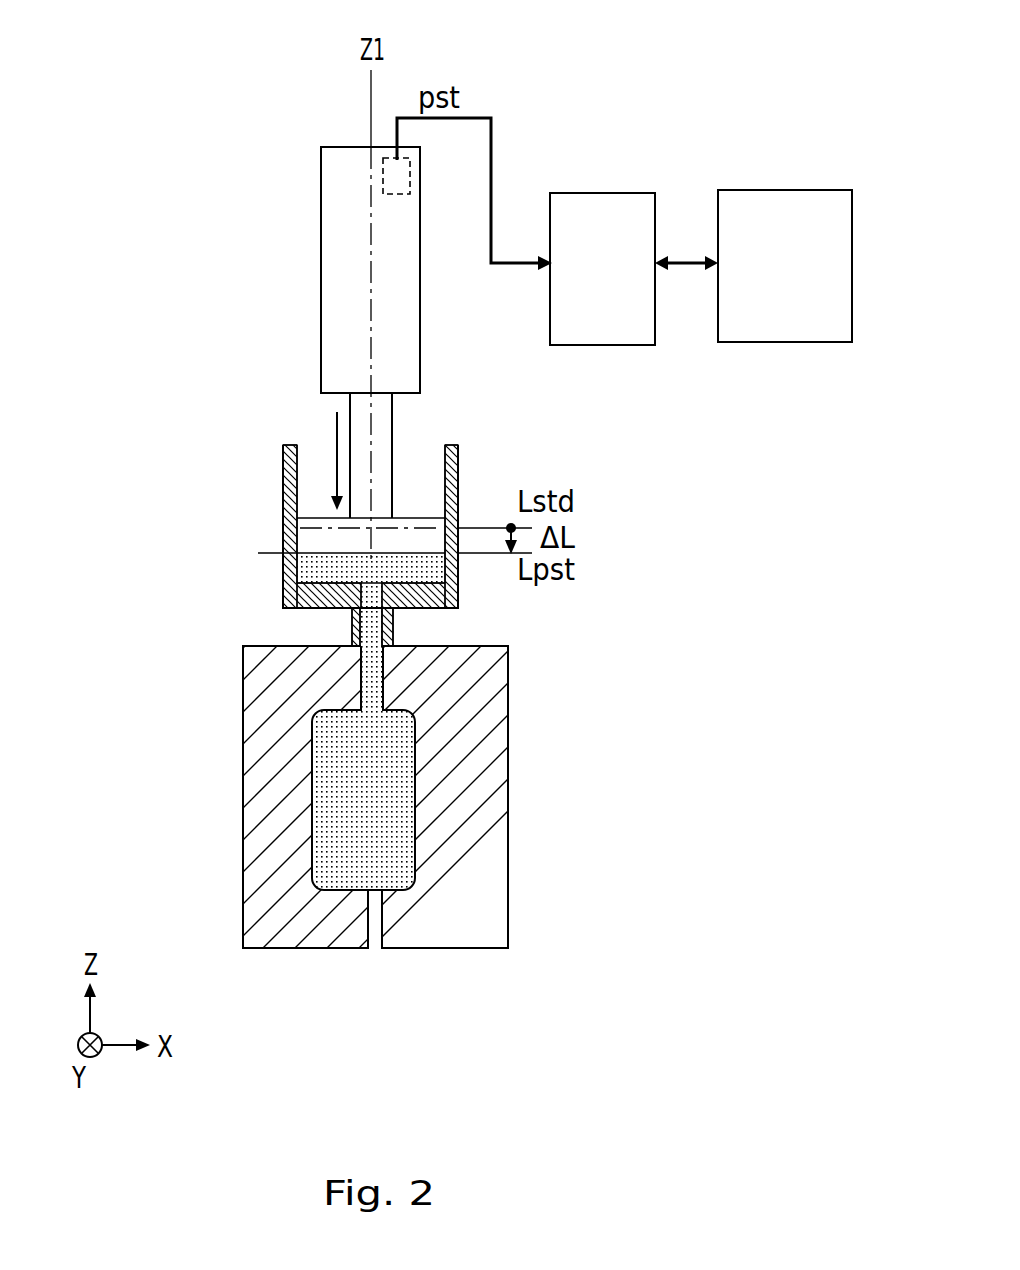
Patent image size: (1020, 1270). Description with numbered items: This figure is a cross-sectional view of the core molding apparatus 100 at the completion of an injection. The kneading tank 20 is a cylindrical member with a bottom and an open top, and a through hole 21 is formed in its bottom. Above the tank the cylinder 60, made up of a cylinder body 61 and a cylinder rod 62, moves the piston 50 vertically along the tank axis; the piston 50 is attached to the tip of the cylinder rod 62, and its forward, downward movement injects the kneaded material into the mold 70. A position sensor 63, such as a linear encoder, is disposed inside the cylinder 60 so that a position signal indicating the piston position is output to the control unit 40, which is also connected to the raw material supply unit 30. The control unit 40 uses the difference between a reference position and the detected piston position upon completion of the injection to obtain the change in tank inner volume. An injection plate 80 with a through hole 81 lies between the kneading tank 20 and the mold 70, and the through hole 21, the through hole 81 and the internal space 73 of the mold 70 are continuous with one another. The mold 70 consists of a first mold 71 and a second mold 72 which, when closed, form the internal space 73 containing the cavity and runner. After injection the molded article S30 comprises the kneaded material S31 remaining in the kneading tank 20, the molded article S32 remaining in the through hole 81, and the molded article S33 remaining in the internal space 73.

The core molding apparatus 100 is at (742, 25).
The kneading tank 20 is at (359, 526).
The through hole 21 is at (372, 585).
The raw material supply unit 30 is at (750, 188).
The control unit 40 is at (578, 190).
The piston 50 is at (421, 518).
The cylinder 60 is at (430, 332).
The cylinder body 61 is at (421, 346).
The cylinder rod 62 is at (393, 406).
The position sensor 63 is at (411, 191).
The mold 70 is at (421, 641).
The first mold 71 is at (333, 928).
The second mold 72 is at (413, 928).
The internal space 73 is at (443, 768).
The injection plate 80 is at (331, 615).
The through hole 81 is at (380, 645).
The molded article S30 is at (176, 564).
The kneaded material S31 is at (373, 574).
The molded article S32 is at (360, 621).
The molded article S33 is at (362, 833).